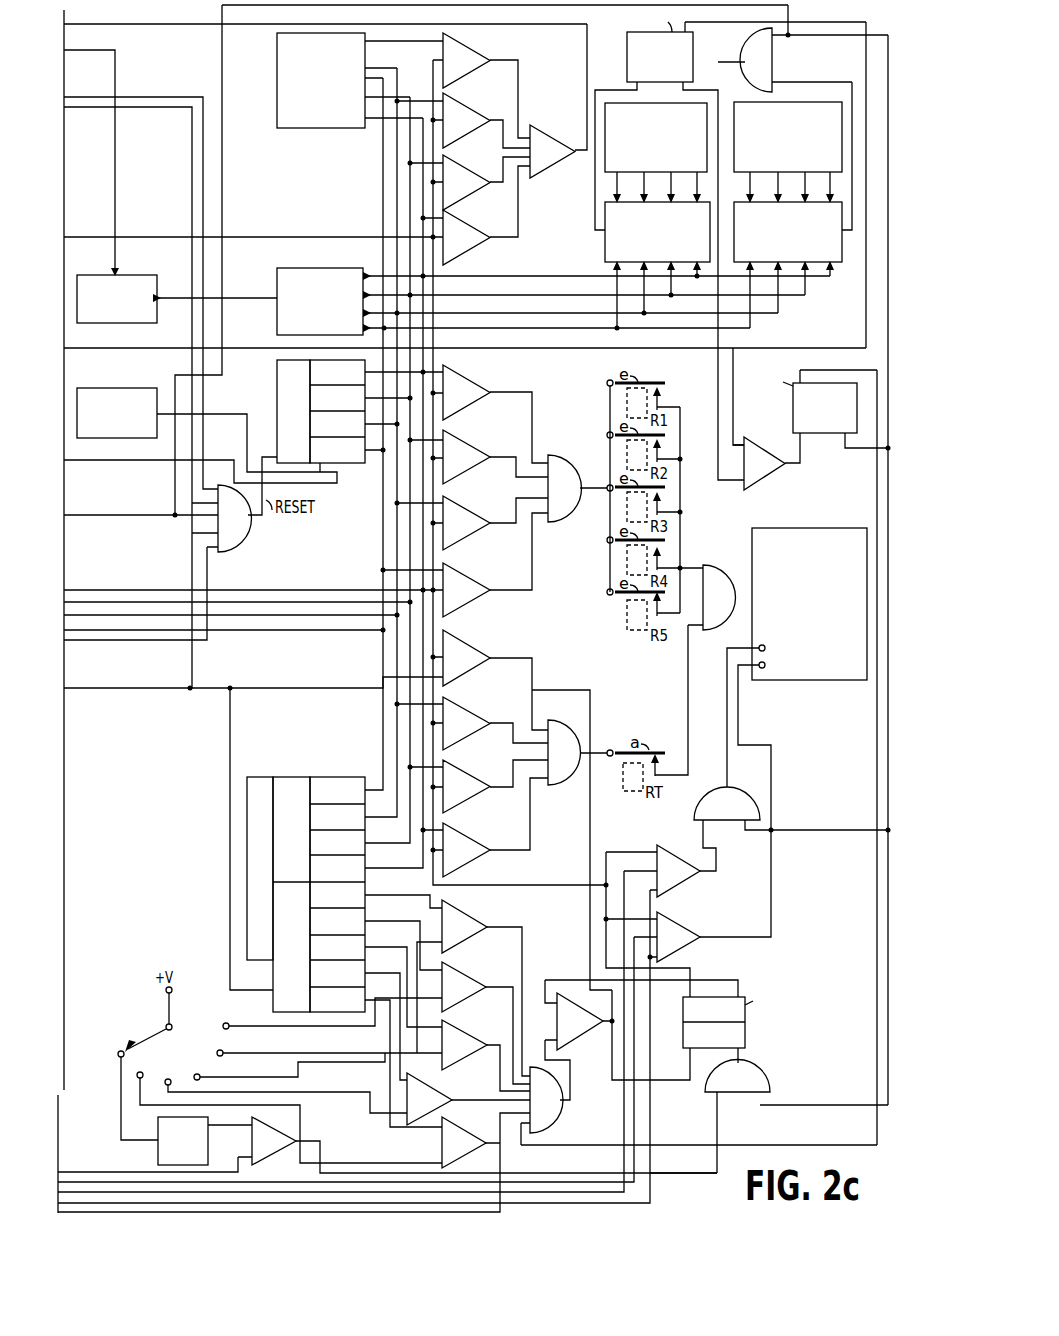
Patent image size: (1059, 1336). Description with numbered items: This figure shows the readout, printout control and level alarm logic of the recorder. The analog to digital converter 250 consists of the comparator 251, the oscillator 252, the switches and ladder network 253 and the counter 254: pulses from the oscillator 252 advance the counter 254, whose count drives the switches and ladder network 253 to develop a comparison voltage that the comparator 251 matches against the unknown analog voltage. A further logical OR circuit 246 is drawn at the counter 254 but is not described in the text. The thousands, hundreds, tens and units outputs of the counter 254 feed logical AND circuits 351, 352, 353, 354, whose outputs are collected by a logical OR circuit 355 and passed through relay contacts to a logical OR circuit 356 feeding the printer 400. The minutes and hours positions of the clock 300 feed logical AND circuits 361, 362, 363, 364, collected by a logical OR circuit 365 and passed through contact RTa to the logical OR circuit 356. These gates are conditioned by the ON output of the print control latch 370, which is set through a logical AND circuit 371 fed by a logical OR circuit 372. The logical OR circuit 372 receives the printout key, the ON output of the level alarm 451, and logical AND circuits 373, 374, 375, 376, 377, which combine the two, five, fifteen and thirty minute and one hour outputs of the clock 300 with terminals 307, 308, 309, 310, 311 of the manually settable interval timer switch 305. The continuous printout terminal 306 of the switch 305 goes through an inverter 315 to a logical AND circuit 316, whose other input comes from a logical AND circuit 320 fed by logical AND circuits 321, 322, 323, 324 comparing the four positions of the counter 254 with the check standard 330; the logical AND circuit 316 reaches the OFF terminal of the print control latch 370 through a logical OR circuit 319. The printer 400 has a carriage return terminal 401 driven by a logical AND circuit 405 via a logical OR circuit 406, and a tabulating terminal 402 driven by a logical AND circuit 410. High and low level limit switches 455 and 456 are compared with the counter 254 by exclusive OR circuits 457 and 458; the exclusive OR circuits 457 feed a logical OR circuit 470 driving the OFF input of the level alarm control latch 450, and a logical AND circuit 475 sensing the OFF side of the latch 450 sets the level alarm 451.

The OR gate 246 is at (242, 534).
The analog to digital converter 250 is at (234, 278).
The comparator 251 is at (142, 276).
The oscillator 252 is at (94, 392).
The switches and ladder network 253 is at (306, 274).
The counter 254 is at (278, 380).
The clock 300 is at (288, 781).
The interval timer switch 305 is at (134, 1001).
The continuous printout interval terminal 306 is at (118, 1054).
The terminal 307 is at (228, 1025).
The terminal 308 is at (223, 1053).
The terminal 309 is at (200, 1076).
The terminal 310 is at (170, 1081).
The terminal 311 is at (142, 1074).
The inverter 315 is at (208, 1142).
The logical AND circuit 316 is at (280, 1132).
The logical OR circuit 319 is at (766, 1084).
The logical AND circuit 320 is at (548, 136).
The logical AND circuit 321 is at (478, 56).
The logical AND circuit 322 is at (466, 114).
The logical AND circuit 323 is at (466, 176).
The logical AND circuit 324 is at (466, 231).
The check standard 330 is at (320, 130).
The logical AND circuit 351 is at (468, 388).
The logical AND circuit 352 is at (468, 454).
The logical AND circuit 353 is at (468, 520).
The logical AND circuit 354 is at (468, 586).
The logical OR circuit 355 is at (566, 522).
The logical OR circuit 356 is at (706, 565).
The logical AND circuit 361 is at (468, 653).
The logical AND circuit 362 is at (468, 720).
The logical AND circuit 363 is at (468, 783).
The logical AND circuit 364 is at (468, 846).
The logical OR circuit 365 is at (548, 724).
The print control latch 370 is at (746, 1046).
The logical AND circuit 371 is at (576, 1037).
The logical OR circuit 372 is at (560, 1112).
The logical AND circuit 373 is at (471, 942).
The logical AND circuit 374 is at (469, 980).
The logical AND circuit 375 is at (464, 1038).
The logical AND circuit 376 is at (438, 1094).
The logical AND circuit 377 is at (466, 1134).
The printer 400 is at (763, 531).
The carriage return terminal 401 is at (758, 646).
The tabulating terminal 402 is at (760, 670).
The logical AND circuit 405 is at (660, 853).
The logical OR circuit 406 is at (730, 788).
The logical AND circuit 410 is at (694, 927).
The level alarm control latch 450 is at (692, 50).
The level alarm 451 is at (807, 436).
The high level alarm switches 455 is at (764, 162).
The low level alarm switches 456 is at (635, 162).
The exclusive OR circuits 457 is at (843, 268).
The exclusive OR circuits 458 is at (604, 248).
The logical OR circuit 470 is at (776, 68).
The logical AND circuit 475 is at (760, 484).